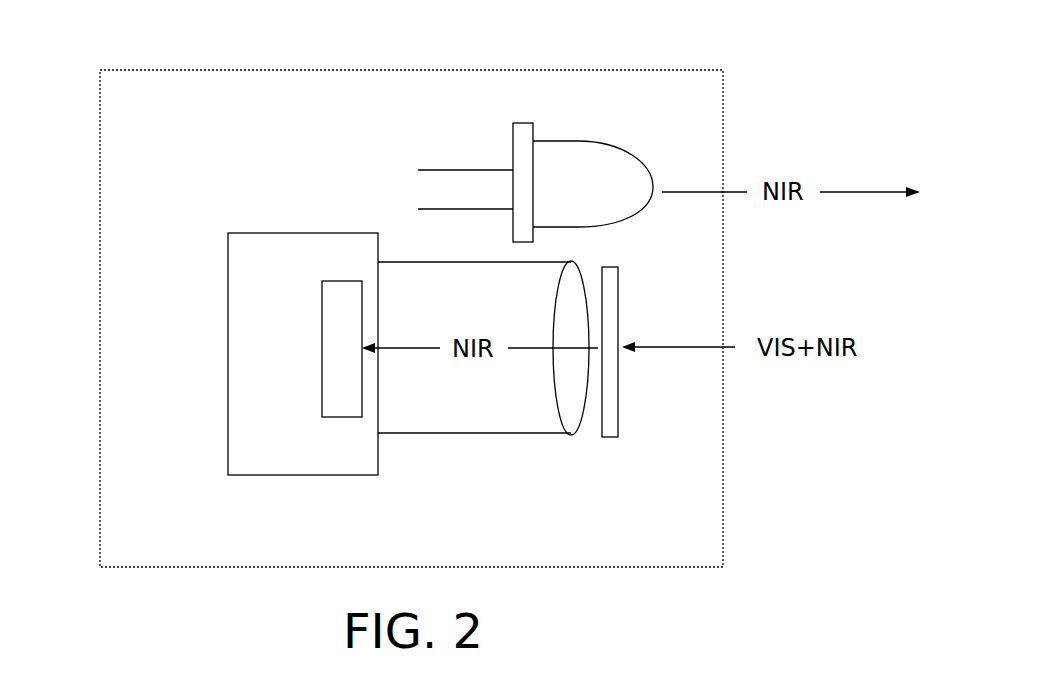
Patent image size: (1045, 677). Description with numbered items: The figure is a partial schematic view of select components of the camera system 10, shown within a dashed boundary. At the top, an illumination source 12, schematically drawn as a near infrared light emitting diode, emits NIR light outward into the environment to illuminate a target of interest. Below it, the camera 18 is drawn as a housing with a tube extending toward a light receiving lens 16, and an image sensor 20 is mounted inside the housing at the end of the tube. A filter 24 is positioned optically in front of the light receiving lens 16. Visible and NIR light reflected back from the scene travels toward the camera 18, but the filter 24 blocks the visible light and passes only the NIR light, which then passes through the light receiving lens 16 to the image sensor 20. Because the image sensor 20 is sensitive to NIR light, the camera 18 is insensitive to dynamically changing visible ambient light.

The camera system 10 is at (336, 43).
The illumination source 12 is at (513, 123).
The light receiving lens 16 is at (577, 437).
The camera 18 is at (427, 468).
The image sensor 20 is at (343, 418).
The filter 24 is at (618, 437).